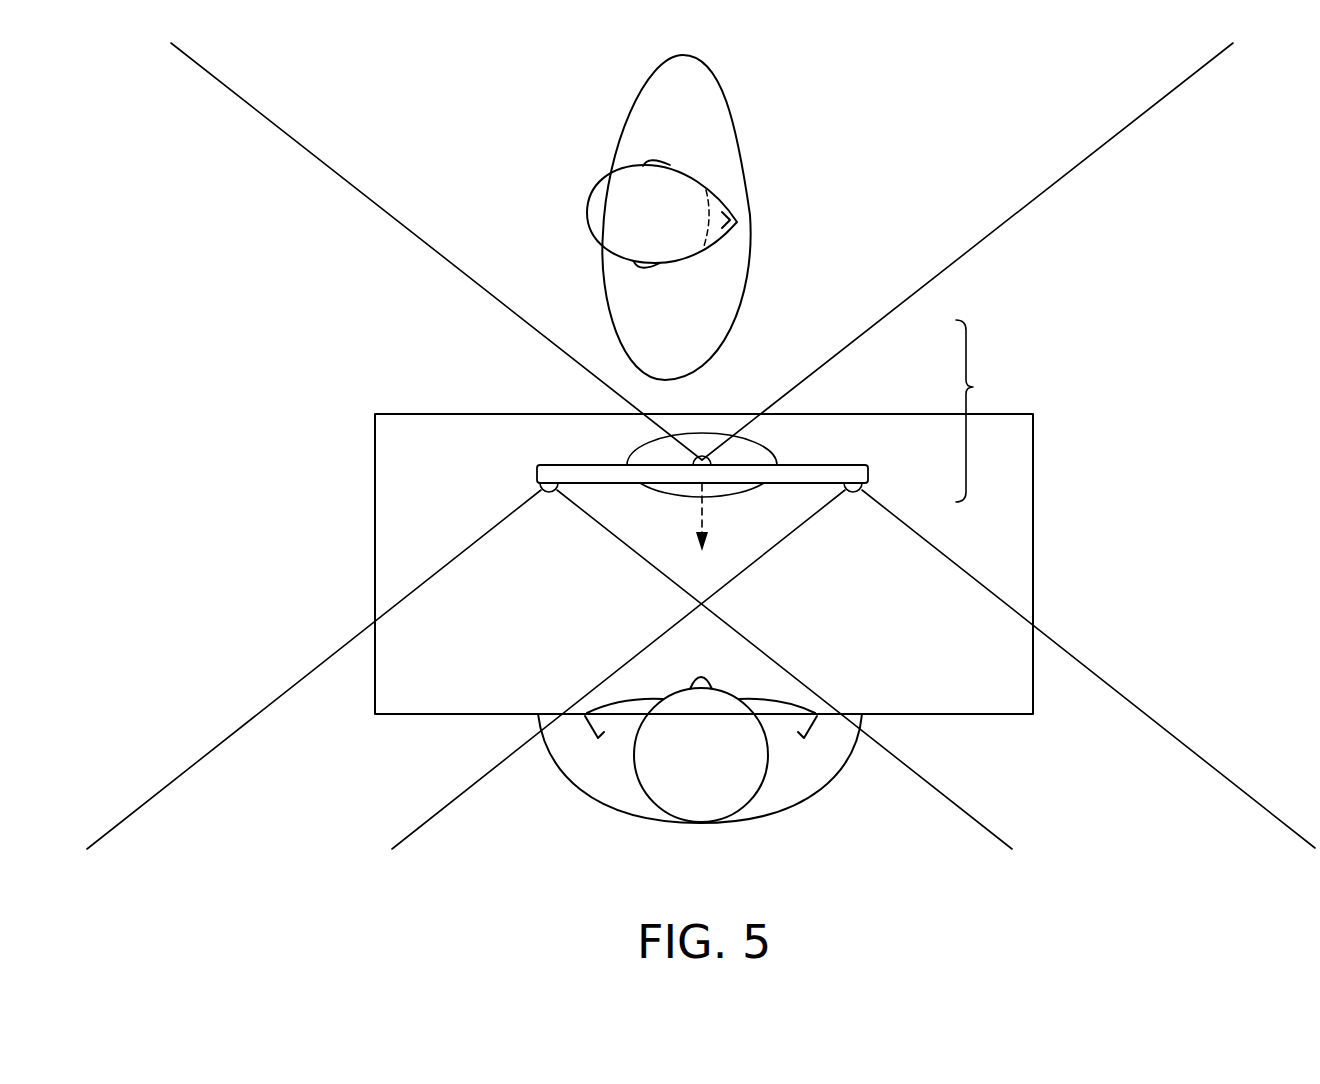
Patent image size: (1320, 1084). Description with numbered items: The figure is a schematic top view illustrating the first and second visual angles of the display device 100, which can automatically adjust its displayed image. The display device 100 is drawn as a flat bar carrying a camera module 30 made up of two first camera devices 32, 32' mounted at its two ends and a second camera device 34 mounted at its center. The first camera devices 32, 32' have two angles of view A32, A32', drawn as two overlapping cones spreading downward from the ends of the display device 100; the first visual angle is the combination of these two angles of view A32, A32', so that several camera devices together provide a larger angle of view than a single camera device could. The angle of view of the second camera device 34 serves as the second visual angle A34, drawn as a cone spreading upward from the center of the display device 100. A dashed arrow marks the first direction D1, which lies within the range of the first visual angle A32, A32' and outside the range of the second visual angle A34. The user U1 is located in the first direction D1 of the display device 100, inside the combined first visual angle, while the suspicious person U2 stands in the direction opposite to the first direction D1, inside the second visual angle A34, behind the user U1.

The display device 100 is at (512, 472).
The camera module 30 is at (985, 411).
The first camera device 32 is at (749, 411).
The first camera device 32' is at (902, 477).
The second camera device 34 is at (702, 458).
The angle of view A32 is at (549, 669).
The angle of view A32' is at (853, 669).
The second visual angle A34 is at (992, 155).
The first direction D1 is at (704, 532).
The user U1 is at (701, 795).
The suspicious person U2 is at (633, 228).